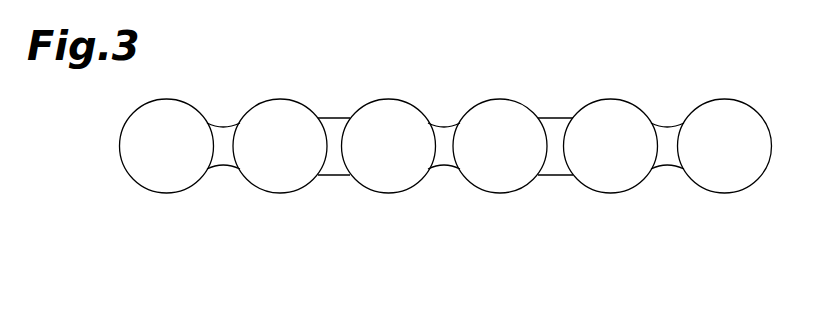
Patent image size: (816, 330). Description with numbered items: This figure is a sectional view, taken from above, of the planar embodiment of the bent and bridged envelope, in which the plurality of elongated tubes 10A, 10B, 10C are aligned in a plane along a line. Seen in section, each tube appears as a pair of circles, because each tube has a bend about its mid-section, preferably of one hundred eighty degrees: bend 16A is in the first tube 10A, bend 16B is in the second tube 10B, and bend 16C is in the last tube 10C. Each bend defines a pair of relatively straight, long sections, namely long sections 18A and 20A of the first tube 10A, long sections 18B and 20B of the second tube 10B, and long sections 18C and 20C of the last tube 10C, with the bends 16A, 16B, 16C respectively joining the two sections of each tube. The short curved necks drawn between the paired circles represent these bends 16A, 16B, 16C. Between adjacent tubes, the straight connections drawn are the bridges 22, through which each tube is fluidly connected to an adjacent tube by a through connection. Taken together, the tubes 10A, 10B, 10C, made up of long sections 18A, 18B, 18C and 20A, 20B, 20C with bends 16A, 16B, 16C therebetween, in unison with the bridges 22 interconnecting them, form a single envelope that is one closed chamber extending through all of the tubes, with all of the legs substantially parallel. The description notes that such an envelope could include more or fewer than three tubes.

The first tube 10A is at (224, 171).
The second tube 10B is at (445, 171).
The last tube 10C is at (668, 171).
The bend 16A is at (221, 122).
The bend 16B is at (443, 122).
The bend 16C is at (665, 122).
The long section 18A is at (170, 193).
The long section 18B is at (395, 193).
The long section 18C is at (614, 193).
The long section 20A is at (281, 193).
The long section 20B is at (503, 193).
The long section 20C is at (724, 193).
The bridges 22 is at (335, 118).